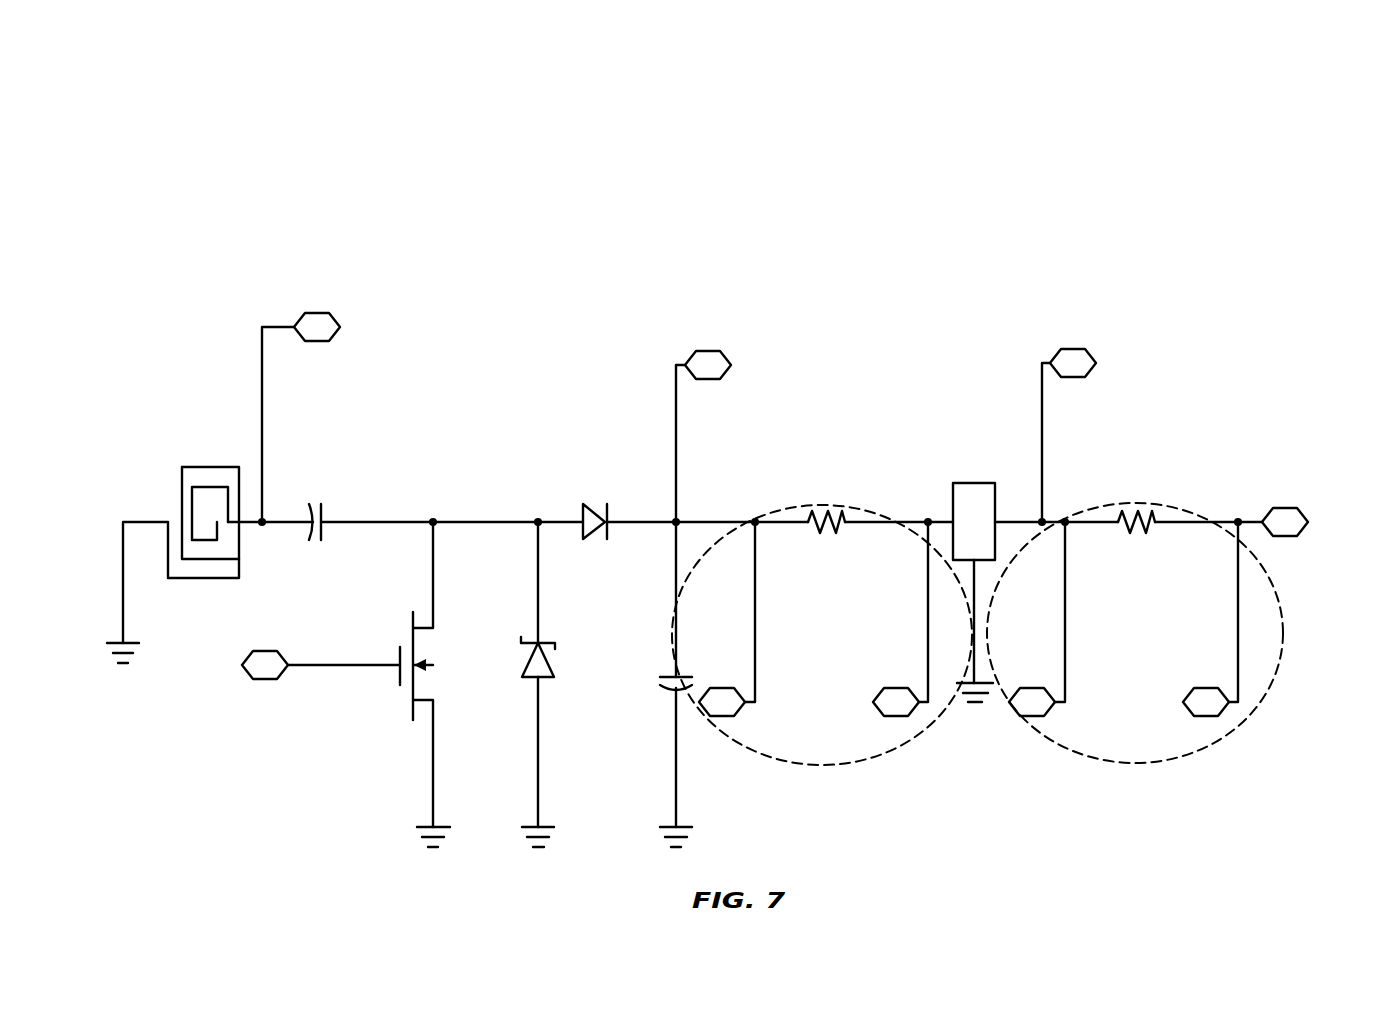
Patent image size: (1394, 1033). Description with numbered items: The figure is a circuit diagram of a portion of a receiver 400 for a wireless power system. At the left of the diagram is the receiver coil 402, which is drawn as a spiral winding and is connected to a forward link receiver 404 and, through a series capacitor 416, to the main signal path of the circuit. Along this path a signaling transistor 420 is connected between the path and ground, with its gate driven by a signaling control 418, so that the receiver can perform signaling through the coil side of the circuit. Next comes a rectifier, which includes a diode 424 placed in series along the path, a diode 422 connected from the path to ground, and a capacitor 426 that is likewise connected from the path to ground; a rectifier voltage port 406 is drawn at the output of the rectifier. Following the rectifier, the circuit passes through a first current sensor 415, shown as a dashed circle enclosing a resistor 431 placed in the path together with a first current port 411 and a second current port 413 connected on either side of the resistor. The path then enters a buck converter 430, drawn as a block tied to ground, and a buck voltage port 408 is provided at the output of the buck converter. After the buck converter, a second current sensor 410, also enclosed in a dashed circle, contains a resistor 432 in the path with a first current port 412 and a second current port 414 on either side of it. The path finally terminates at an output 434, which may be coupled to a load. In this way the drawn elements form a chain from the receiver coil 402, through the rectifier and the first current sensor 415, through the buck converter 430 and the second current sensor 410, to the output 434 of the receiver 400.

The receiver 400 is at (541, 134).
The receiver coil 402 is at (210, 467).
The forward link receiver 404 is at (318, 313).
The rectifier voltage port 406 is at (705, 352).
The buck voltage port 408 is at (1070, 352).
The second current sensor 410 is at (1280, 640).
The first current port 411 is at (738, 716).
The first current port 412 is at (1050, 688).
The second current port 413 is at (895, 689).
The second current port 414 is at (1205, 688).
The first current sensor 415 is at (880, 758).
The capacitor 416 is at (325, 512).
The signaling control 418 is at (266, 652).
The signaling transistor 420 is at (410, 635).
The diode 422 is at (525, 641).
The diode 424 is at (590, 503).
The capacitor 426 is at (667, 676).
The buck converter 430 is at (970, 483).
The resistor 431 is at (832, 535).
The resistor 432 is at (1142, 535).
The output 434 is at (1287, 509).